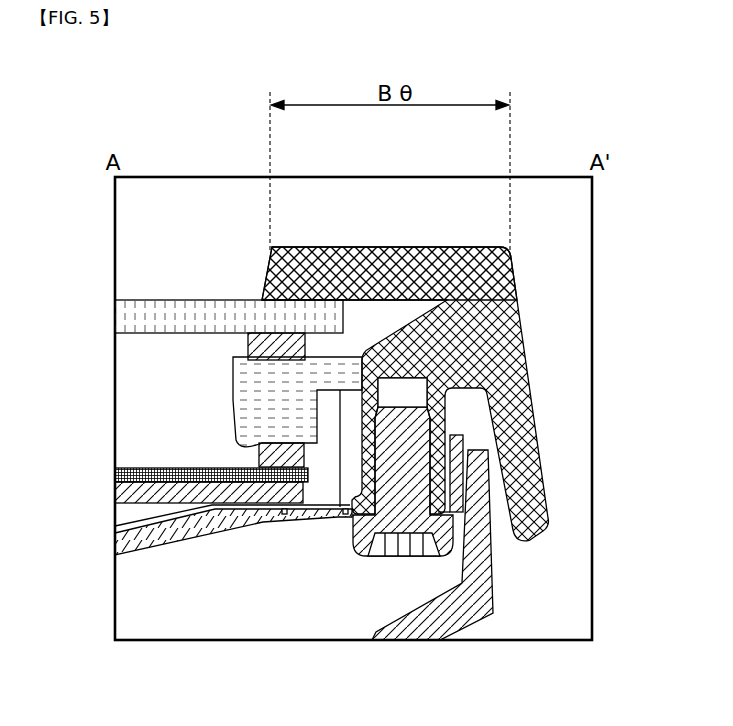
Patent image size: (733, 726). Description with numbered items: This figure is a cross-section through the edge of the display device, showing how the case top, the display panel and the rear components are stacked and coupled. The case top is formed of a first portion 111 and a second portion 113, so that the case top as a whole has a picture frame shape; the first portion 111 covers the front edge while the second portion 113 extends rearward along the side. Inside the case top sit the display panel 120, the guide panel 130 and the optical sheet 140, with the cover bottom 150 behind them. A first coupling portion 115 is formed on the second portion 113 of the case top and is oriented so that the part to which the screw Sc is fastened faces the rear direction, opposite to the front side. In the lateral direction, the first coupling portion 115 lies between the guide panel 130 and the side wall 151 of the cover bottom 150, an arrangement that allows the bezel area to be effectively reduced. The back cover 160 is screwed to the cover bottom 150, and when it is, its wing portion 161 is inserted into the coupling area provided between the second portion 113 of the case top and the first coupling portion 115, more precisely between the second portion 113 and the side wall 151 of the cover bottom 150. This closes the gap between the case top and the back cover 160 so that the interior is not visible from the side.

The first portion 111 is at (386, 268).
The second portion 113 is at (485, 357).
The first coupling portion 115 is at (373, 440).
The display panel 120 is at (128, 318).
The guide panel 130 is at (258, 403).
The optical sheet 140 is at (108, 470).
The cover bottom 150 is at (320, 515).
The side wall 151 is at (440, 506).
The back cover 160 is at (520, 576).
The wing portion 161 is at (490, 565).
The screw Sc is at (400, 522).